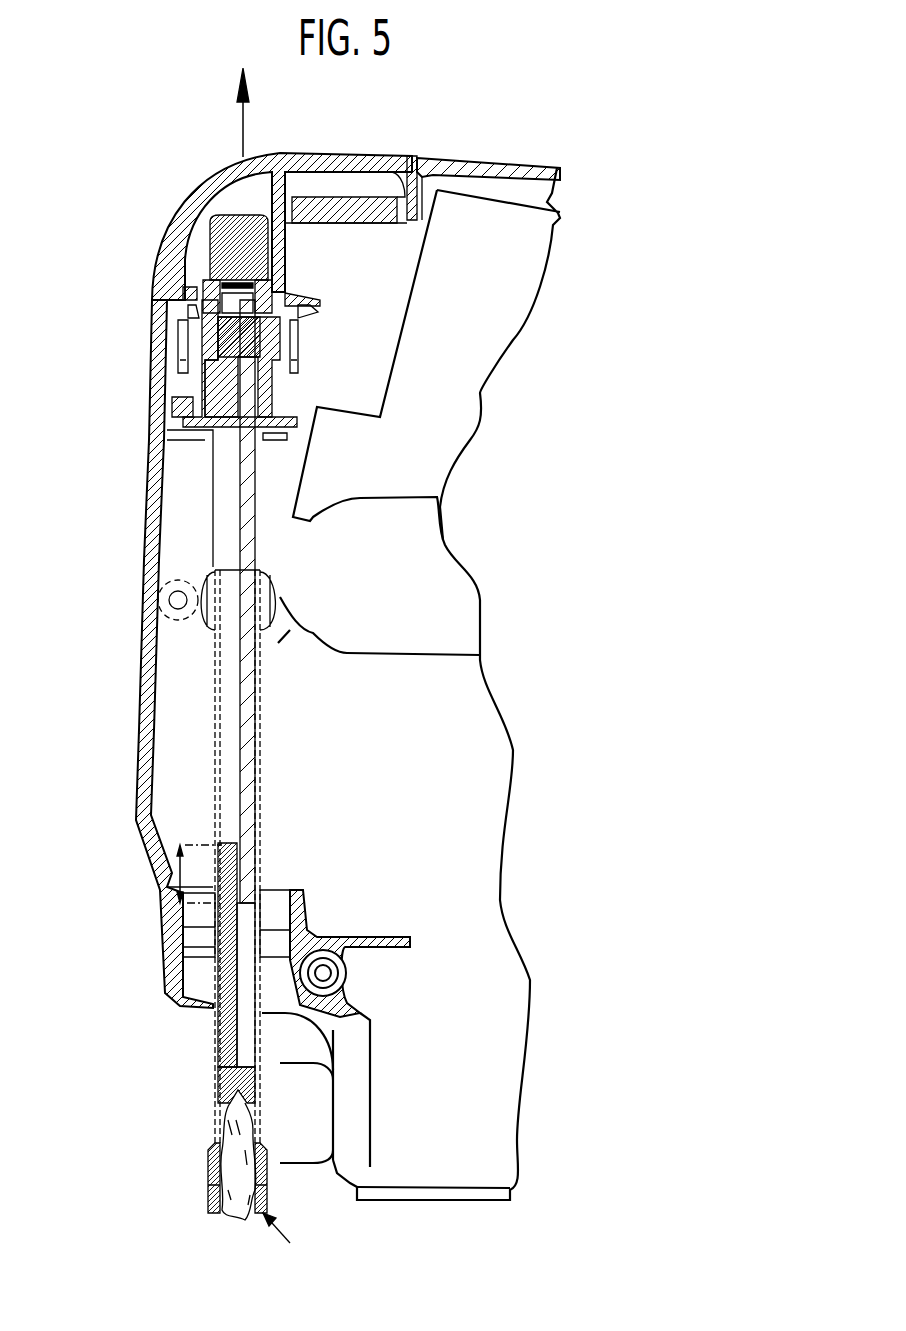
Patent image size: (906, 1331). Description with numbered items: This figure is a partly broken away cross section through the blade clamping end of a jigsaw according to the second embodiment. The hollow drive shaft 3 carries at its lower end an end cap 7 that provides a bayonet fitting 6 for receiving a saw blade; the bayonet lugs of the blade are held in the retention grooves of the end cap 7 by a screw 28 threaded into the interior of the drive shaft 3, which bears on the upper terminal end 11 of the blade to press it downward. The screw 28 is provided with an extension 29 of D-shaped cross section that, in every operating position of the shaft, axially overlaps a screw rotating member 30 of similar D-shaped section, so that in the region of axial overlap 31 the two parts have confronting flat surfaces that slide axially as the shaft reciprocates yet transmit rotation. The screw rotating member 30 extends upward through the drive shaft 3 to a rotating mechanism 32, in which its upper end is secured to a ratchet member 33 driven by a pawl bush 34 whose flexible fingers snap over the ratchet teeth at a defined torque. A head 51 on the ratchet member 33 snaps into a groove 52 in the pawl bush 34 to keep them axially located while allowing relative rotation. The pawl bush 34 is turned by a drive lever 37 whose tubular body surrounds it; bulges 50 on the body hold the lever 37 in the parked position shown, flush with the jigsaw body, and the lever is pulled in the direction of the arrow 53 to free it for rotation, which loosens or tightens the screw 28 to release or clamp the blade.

The drive shaft 3 is at (216, 1045).
The bayonet fitting 6 is at (285, 1237).
The end cap 7 is at (208, 1185).
The upper terminal end 11 is at (230, 1130).
The screw 28 is at (218, 1083).
The extension 29 is at (185, 945).
The screw rotating member 30 is at (250, 748).
The region of axial overlap 31 is at (178, 870).
The rotating mechanism 32 is at (150, 305).
The ratchet member 33 is at (215, 393).
The pawl bush 34 is at (232, 225).
The drive lever 37 is at (338, 158).
The bulges 50 is at (183, 350).
The head 51 is at (283, 292).
The groove 52 is at (232, 290).
The arrow 53 is at (243, 125).